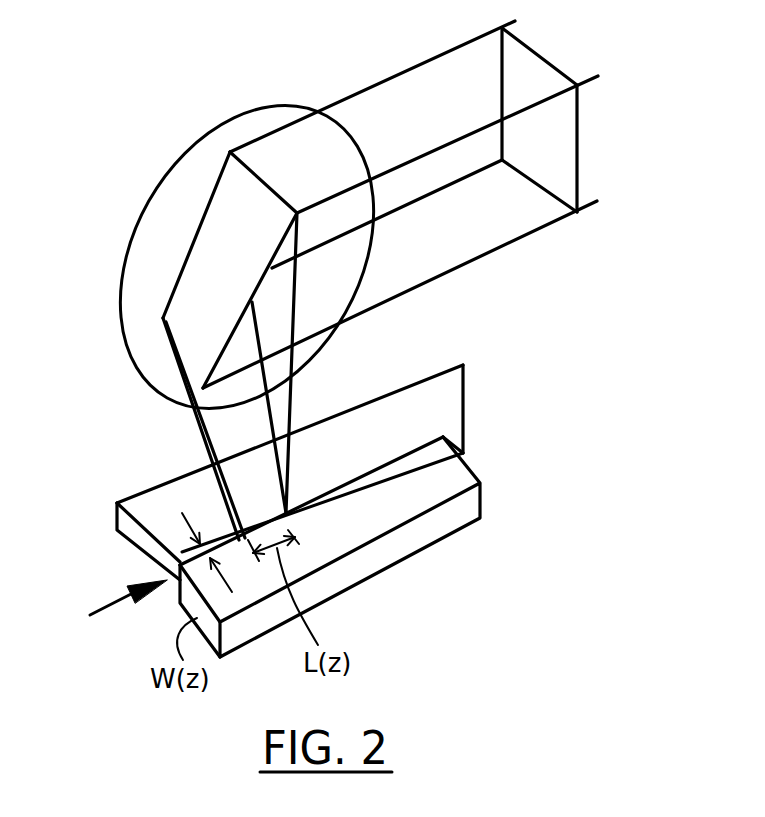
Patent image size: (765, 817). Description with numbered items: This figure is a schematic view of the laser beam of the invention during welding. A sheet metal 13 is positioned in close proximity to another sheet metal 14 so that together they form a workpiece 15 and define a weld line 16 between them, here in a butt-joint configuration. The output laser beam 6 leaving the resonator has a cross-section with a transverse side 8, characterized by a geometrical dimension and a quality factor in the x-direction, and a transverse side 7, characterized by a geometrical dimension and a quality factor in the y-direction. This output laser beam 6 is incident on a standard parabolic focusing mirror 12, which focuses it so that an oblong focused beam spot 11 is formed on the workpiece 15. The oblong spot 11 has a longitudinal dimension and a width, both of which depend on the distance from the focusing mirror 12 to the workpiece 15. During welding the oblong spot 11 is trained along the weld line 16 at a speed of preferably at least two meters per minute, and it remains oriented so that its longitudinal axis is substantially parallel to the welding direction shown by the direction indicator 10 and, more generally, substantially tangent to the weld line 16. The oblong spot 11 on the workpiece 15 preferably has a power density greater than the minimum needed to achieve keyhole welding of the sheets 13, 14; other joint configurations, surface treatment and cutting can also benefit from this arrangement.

The output laser beam 6 is at (563, 117).
The transverse side 7 is at (542, 52).
The transverse side 8 is at (578, 155).
The direction indicator 10 is at (113, 608).
The oblong focused beam spot 11 is at (263, 518).
The parabolic focusing mirror 12 is at (122, 298).
The sheet metal 13 is at (463, 383).
The sheet metal 14 is at (468, 473).
The workpiece 15 is at (125, 540).
The weld line 16 is at (380, 467).